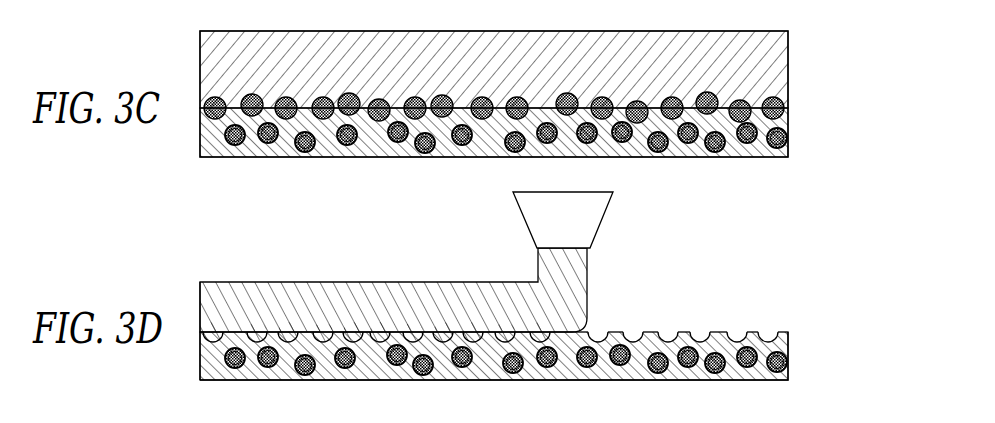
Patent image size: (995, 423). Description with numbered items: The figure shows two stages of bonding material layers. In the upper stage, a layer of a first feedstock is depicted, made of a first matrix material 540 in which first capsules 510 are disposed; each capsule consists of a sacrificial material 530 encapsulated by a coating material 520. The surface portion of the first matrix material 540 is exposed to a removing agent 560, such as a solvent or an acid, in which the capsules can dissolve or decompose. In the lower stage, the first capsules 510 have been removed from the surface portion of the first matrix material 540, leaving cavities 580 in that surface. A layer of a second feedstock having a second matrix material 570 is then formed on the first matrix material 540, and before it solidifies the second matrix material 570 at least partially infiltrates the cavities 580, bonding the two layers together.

In FIG. 3C, the first capsules 510 is at (215, 148).
In FIG. 3D, the first capsules 510 is at (214, 368).
In FIG. 3C, the sacrificial material 530 is at (211, 97).
In FIG. 3C, the first matrix material 540 is at (736, 152).
In FIG. 3D, the first matrix material 540 is at (610, 383).
In FIG. 3C, the removing agent 560 is at (622, 48).
In FIG. 3D, the second matrix material 570 is at (290, 294).
In FIG. 3D, the cavities 580 is at (384, 328).
In FIG. 3D, the coating material 520 is at (724, 421).